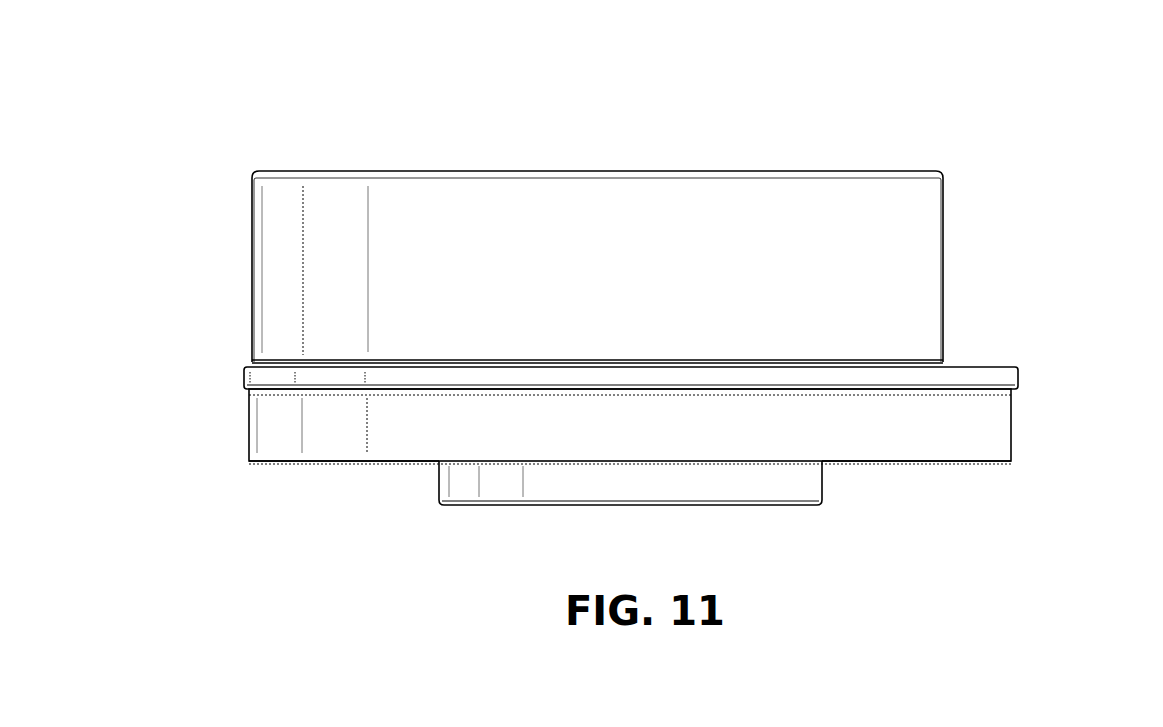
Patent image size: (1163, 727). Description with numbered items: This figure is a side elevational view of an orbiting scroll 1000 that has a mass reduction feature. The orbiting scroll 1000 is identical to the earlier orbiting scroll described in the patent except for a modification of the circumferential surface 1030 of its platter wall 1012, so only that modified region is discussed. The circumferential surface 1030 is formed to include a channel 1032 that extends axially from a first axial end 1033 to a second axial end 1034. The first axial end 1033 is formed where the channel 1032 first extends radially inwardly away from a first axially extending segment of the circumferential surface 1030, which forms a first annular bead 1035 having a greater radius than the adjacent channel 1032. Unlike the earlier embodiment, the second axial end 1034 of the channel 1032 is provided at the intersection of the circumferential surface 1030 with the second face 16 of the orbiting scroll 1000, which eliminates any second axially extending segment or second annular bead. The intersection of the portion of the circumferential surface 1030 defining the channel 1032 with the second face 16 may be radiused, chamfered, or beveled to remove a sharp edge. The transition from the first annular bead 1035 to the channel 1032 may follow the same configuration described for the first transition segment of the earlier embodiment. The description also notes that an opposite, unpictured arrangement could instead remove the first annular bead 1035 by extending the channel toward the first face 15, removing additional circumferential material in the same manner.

The orbiting scroll 1000 is at (635, 308).
The platter wall 1012 is at (1003, 361).
The first face 15 is at (283, 367).
The circumferential surface 1030 is at (635, 387).
The first annular bead 1035 is at (244, 380).
The first axial end 1033 is at (249, 392).
The channel 1032 is at (579, 457).
The second axial end 1034 is at (249, 460).
The second face 16 is at (292, 463).